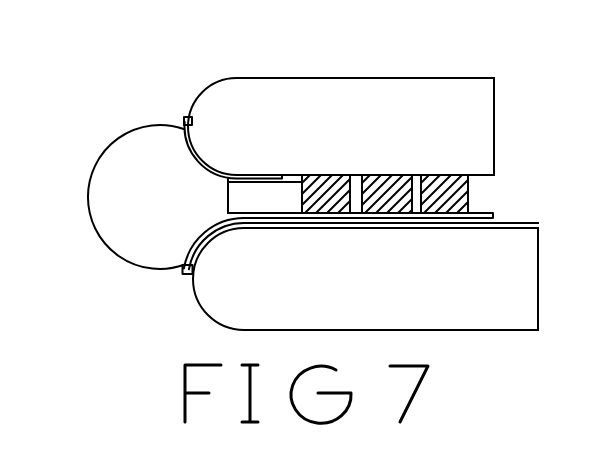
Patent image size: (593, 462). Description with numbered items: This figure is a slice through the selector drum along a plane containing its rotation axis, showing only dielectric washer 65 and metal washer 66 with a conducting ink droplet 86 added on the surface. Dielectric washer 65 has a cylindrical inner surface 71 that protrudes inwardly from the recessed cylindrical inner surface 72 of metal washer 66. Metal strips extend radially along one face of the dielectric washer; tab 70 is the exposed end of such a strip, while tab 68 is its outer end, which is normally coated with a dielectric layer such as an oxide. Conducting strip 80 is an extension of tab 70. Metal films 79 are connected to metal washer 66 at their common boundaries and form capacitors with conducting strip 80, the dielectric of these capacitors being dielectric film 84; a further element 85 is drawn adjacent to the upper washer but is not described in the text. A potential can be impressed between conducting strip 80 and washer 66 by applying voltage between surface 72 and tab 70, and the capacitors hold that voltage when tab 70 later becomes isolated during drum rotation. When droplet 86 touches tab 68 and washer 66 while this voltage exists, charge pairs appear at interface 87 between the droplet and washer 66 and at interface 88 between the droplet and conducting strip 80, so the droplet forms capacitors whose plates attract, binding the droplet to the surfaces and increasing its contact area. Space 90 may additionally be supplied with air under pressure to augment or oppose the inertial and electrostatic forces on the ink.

The dielectric washer 65 is at (374, 314).
The metal washer 66 is at (363, 111).
The tab 68 is at (207, 240).
The tab 70 is at (527, 221).
The cylindrical inner surface 71 is at (538, 281).
The cylindrical inner surface 72 is at (494, 126).
The metal films 79 is at (438, 183).
The conducting strip 80 is at (372, 228).
The dielectric film 84 is at (188, 276).
The liner end tab 85 is at (188, 118).
The conducting droplet 86 is at (122, 157).
The interface 87 is at (197, 158).
The interface 88 is at (197, 235).
The space 90 is at (278, 209).